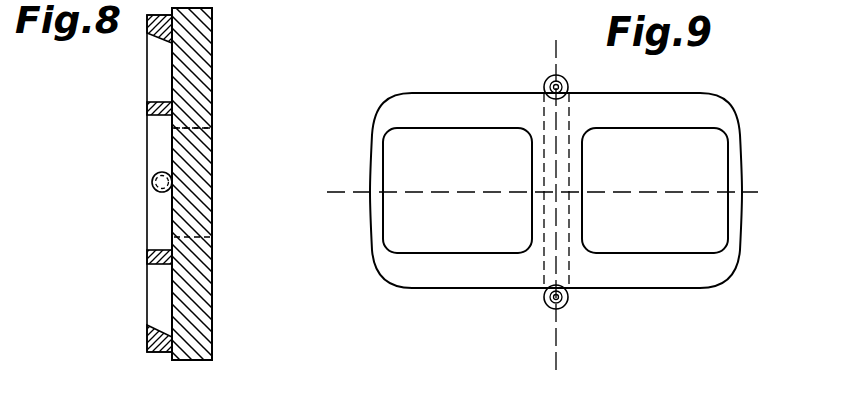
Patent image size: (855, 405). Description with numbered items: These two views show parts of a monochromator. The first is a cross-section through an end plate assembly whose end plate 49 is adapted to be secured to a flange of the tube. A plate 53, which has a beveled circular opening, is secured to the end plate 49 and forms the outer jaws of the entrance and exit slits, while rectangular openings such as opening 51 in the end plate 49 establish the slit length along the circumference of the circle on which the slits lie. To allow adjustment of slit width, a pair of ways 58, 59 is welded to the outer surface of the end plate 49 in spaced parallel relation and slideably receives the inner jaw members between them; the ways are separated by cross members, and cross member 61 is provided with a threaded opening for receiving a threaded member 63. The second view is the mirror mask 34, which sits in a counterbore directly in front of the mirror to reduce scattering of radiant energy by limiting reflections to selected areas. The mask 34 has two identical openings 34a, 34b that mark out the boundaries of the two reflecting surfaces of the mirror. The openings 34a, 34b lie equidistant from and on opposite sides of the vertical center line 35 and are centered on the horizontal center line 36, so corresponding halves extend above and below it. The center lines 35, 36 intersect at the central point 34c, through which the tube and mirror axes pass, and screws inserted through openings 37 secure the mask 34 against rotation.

In FIG. 9, the mirror mask 34 is at (690, 277).
In FIG. 9, the opening 34a is at (698, 136).
In FIG. 9, the opening 34b is at (390, 155).
In FIG. 9, the central point 34c is at (558, 191).
In FIG. 9, the vertical center line 35 is at (560, 336).
In FIG. 9, the horizontal center line 36 is at (443, 189).
In FIG. 9, the openings 37 is at (547, 78).
In FIG. 8, the end plate 49 is at (208, 318).
In FIG. 8, the opening 51 is at (215, 201).
In FIG. 8, the plate 53 is at (149, 34).
In FIG. 8, the way 58 is at (147, 109).
In FIG. 8, the way 59 is at (147, 257).
In FIG. 8, the cross member 61 is at (158, 230).
In FIG. 8, the threaded member 63 is at (152, 179).